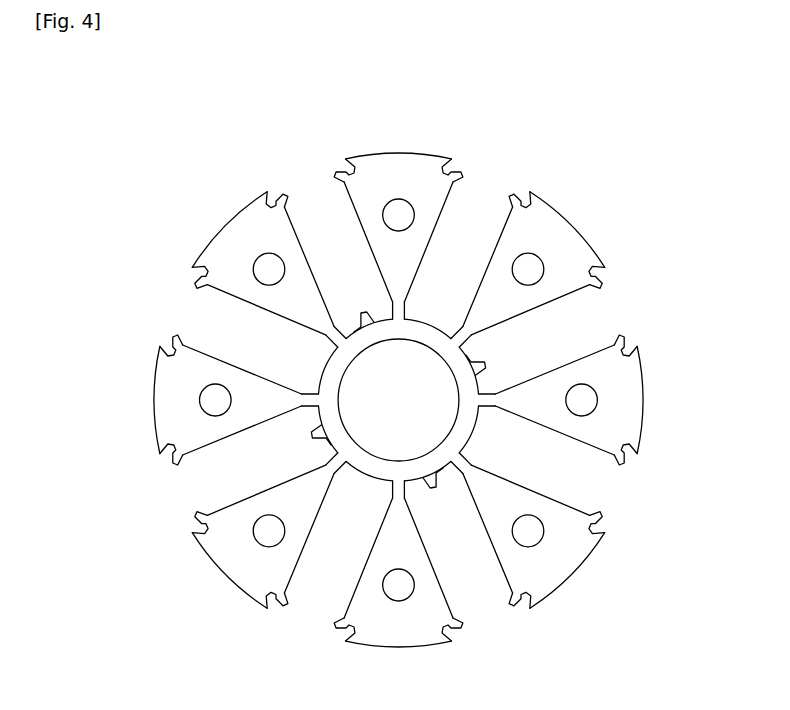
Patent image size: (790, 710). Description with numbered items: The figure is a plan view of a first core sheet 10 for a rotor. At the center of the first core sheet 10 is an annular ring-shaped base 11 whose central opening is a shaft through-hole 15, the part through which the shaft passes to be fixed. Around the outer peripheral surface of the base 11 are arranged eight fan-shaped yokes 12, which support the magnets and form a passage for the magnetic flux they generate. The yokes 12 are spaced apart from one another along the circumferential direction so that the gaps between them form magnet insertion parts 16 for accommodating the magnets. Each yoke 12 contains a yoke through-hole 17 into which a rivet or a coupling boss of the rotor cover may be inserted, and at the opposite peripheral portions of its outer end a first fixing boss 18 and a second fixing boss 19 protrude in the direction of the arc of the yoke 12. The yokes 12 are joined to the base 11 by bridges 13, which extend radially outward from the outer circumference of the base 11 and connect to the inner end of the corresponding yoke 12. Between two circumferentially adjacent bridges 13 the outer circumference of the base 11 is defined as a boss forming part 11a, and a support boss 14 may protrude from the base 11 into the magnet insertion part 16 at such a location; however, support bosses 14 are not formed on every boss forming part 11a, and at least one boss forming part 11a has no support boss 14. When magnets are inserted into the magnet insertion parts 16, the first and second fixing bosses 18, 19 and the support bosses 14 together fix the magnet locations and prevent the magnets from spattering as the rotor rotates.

The first core sheet 10 is at (210, 208).
The base 11 is at (333, 373).
The boss forming part 11a is at (477, 428).
The yoke 12 is at (563, 232).
The bridge 13 is at (343, 465).
The support boss 14 is at (437, 488).
The shaft through-hole 15 is at (313, 438).
The magnet insertion part 16 is at (340, 242).
The yoke through-hole 17 is at (585, 397).
The first fixing boss 18 is at (605, 285).
The second fixing boss 19 is at (512, 195).